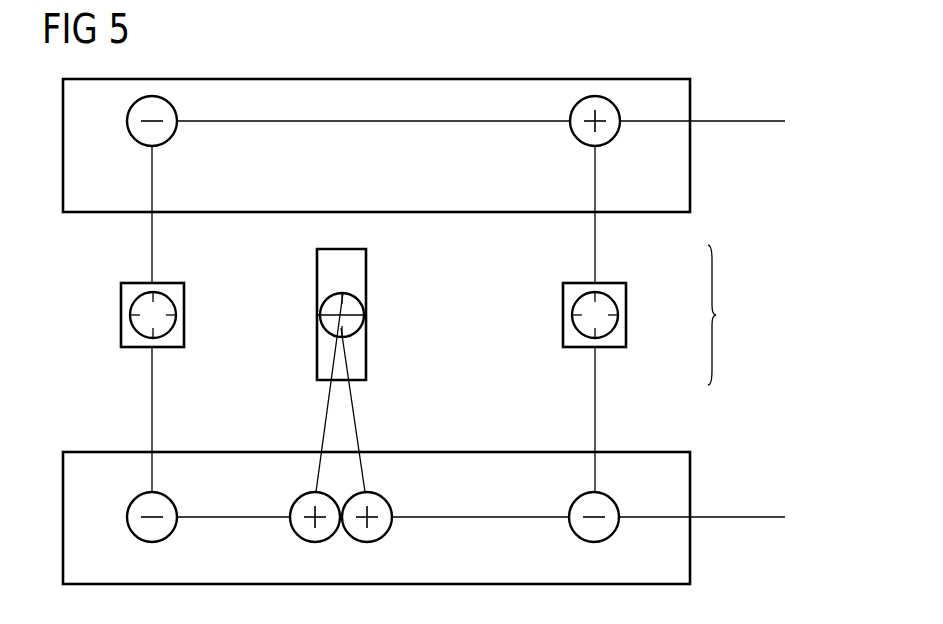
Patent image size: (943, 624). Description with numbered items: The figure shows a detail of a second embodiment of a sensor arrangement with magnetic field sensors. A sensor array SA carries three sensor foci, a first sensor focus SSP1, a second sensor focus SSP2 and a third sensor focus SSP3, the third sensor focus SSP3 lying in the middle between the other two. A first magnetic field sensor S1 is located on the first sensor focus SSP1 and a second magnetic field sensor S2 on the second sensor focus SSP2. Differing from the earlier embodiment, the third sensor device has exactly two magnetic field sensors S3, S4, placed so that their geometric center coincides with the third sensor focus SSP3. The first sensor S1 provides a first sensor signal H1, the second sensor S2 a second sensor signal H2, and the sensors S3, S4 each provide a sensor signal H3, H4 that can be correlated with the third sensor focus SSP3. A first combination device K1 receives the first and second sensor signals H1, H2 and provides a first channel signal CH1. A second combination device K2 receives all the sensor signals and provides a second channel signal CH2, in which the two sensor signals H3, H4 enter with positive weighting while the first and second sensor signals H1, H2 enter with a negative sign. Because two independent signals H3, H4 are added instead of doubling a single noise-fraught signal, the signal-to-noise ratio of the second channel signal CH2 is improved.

The first combination device K1 is at (415, 79).
The second combination device K2 is at (690, 548).
The first channel signal CH1 is at (740, 121).
The second channel signal CH2 is at (743, 517).
The first sensor signal H1 is at (135, 319).
The second sensor signal H2 is at (576, 319).
The third sensor signal H3 is at (366, 410).
The fourth sensor signal H4 is at (315, 392).
The first magnetic field sensor S1 is at (121, 330).
The second magnetic field sensor S2 is at (563, 300).
The third magnetic field sensor S3 is at (366, 352).
The fourth magnetic field sensor S4 is at (317, 283).
The first sensor focus SSP1 is at (131, 306).
The second sensor focus SSP2 is at (580, 333).
The third sensor focus SSP3 is at (326, 332).
The sensor array SA is at (730, 315).